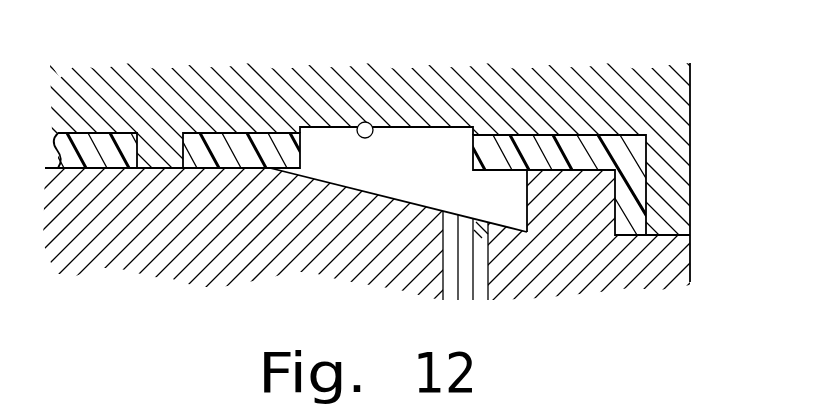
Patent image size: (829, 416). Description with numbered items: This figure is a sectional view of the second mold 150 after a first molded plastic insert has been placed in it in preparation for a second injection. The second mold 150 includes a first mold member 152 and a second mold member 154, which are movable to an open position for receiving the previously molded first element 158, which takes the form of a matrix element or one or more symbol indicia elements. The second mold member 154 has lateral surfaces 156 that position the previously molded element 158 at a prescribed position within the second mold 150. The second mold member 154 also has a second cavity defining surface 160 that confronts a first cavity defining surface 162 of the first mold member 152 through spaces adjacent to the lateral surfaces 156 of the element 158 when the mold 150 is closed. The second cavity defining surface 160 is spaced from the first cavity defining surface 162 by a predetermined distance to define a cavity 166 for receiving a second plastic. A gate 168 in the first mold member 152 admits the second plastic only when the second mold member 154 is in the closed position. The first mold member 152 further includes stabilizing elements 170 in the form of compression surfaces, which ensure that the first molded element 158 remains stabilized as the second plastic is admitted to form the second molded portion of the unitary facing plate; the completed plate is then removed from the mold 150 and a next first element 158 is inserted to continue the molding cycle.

The second mold 150 is at (717, 176).
The first mold member 152 is at (683, 263).
The second mold member 154 is at (680, 112).
The lateral surfaces 156 is at (118, 133).
The previously molded first element 158 is at (473, 150).
The second cavity defining surface 160 is at (357, 122).
The first cavity defining surface 162 is at (412, 197).
The cavity 166 is at (372, 183).
The gate 168 is at (480, 290).
The stabilizing elements 170 is at (233, 148).